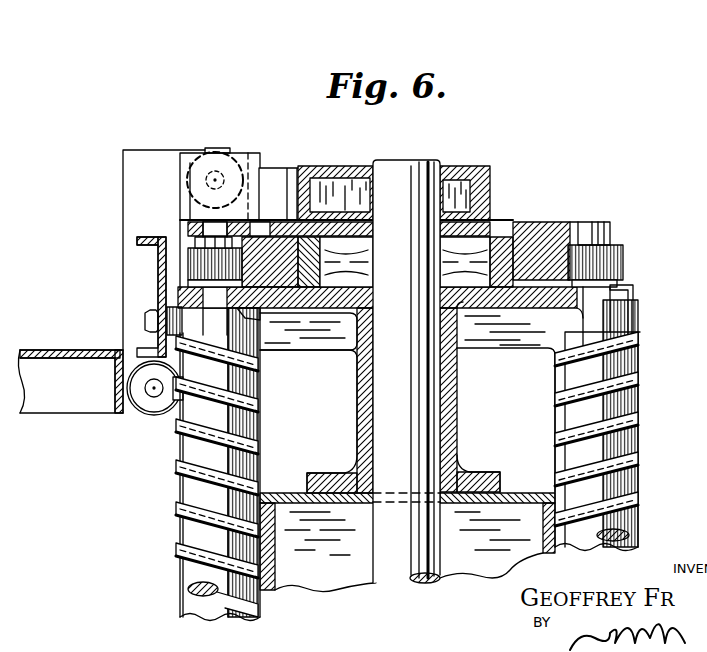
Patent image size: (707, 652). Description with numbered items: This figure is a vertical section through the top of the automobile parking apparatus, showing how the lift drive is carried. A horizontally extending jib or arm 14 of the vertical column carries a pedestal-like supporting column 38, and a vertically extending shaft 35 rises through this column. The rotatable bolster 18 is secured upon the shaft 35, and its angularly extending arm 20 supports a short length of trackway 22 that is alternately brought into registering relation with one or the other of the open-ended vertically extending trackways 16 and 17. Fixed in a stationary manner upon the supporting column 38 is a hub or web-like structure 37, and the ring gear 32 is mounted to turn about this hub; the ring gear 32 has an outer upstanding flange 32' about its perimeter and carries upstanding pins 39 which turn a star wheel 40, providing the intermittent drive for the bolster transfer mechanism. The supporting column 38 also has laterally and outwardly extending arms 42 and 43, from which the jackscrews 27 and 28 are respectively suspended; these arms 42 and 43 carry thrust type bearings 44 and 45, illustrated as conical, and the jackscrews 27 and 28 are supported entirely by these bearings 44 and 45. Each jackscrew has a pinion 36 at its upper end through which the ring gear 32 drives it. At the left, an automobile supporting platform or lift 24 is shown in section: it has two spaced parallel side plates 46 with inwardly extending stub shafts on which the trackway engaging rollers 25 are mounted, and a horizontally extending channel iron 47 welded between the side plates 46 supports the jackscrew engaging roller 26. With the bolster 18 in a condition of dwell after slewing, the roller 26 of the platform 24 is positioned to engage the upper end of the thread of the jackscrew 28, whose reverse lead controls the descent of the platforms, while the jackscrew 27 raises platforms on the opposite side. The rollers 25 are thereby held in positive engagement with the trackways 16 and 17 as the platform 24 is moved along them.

The horizontally extending jib or arm 14 is at (332, 572).
The vertically extending trackway 16 is at (563, 463).
The vertically extending trackway 17 is at (253, 473).
The rotatable bolster 18 is at (478, 188).
The angularly extending arm 20 is at (272, 182).
The short length of trackway 22 is at (247, 155).
The automobile supporting platform or lift 24 is at (40, 357).
The trackway engaging roller 25 is at (216, 151).
The jackscrew engaging roller 26 is at (175, 312).
The jackscrew 27 is at (623, 405).
The jackscrew 28 is at (200, 493).
The ring gear 32 is at (545, 235).
The outer upstanding flange 32' is at (597, 216).
The vertically extending shaft 35 is at (400, 464).
The pinion 36 is at (183, 257).
The hub or web-like structure 37 is at (318, 312).
The supporting column 38 is at (360, 403).
The upstanding pin 39 is at (262, 232).
The star wheel 40 is at (483, 232).
The laterally extending arm 42 is at (517, 340).
The laterally extending arm 43 is at (297, 340).
The thrust type bearing 44 is at (623, 297).
The thrust type bearing 45 is at (237, 320).
The side plate 46 is at (135, 168).
The horizontally extending channel iron 47 is at (123, 257).